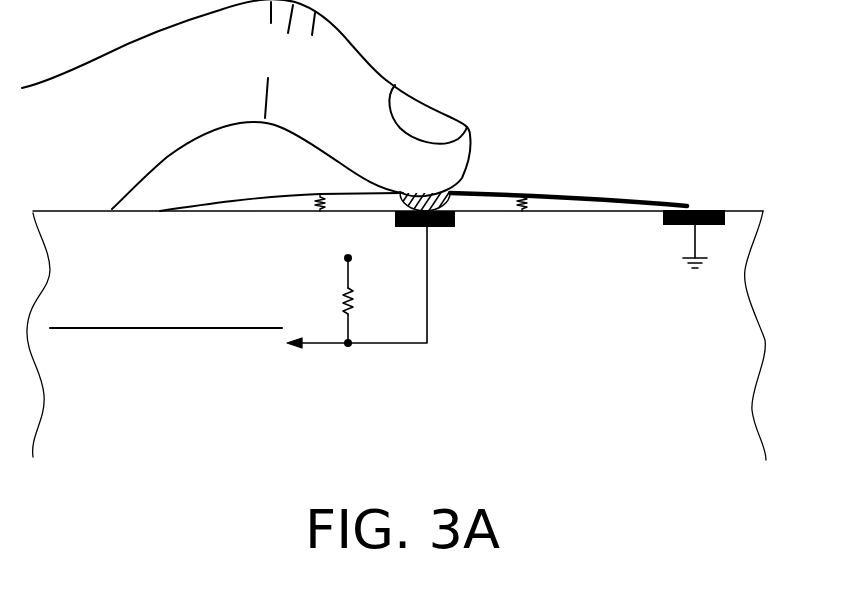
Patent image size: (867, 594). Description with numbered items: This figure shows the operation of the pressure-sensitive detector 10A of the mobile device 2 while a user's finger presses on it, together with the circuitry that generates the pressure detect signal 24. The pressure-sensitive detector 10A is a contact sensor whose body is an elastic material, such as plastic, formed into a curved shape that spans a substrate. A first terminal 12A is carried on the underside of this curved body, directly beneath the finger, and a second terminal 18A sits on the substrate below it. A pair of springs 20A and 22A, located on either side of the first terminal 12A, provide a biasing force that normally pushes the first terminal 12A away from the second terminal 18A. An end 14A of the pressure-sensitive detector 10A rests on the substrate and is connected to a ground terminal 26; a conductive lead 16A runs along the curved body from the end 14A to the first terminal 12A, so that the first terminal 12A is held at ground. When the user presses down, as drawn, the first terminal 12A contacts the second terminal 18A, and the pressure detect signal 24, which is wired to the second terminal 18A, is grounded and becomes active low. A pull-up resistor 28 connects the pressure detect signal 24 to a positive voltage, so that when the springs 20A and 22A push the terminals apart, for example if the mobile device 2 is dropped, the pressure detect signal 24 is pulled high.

The mobile device 2 is at (694, 98).
The pressure-sensitive detector 10A is at (278, 195).
The first terminal 12A is at (452, 192).
The end 14A is at (682, 204).
The conductive lead 16A is at (583, 197).
The second terminal 18A is at (442, 228).
The spring 20A is at (312, 203).
The spring 22A is at (522, 213).
The pressure detect signal 24 is at (313, 348).
The ground terminal 26 is at (668, 227).
The pull-up resistor 28 is at (358, 300).